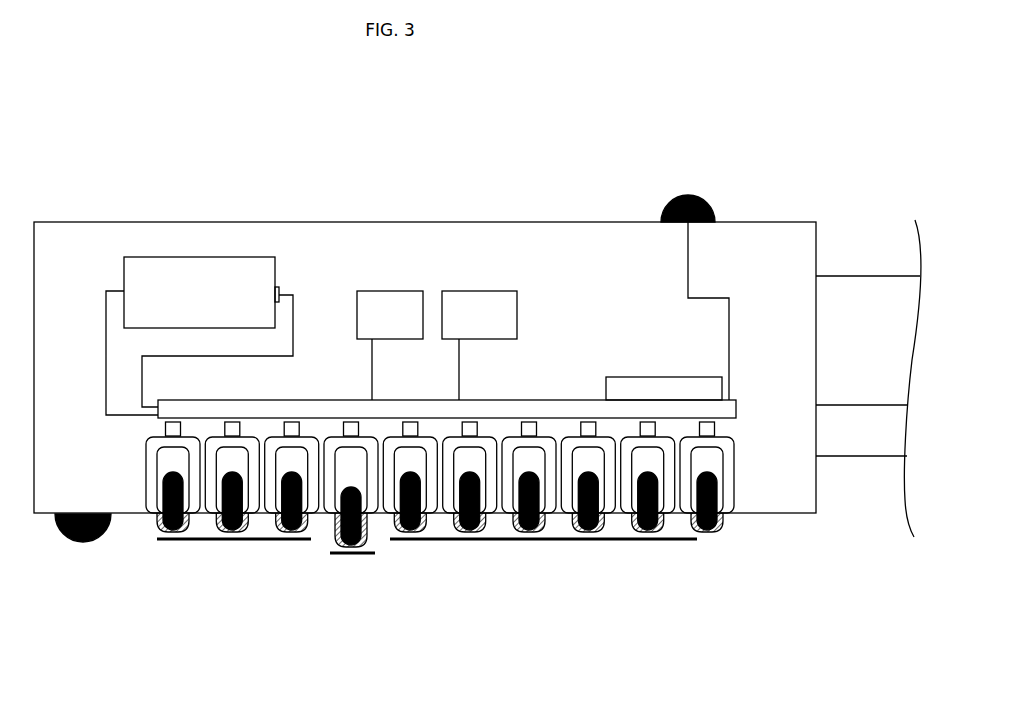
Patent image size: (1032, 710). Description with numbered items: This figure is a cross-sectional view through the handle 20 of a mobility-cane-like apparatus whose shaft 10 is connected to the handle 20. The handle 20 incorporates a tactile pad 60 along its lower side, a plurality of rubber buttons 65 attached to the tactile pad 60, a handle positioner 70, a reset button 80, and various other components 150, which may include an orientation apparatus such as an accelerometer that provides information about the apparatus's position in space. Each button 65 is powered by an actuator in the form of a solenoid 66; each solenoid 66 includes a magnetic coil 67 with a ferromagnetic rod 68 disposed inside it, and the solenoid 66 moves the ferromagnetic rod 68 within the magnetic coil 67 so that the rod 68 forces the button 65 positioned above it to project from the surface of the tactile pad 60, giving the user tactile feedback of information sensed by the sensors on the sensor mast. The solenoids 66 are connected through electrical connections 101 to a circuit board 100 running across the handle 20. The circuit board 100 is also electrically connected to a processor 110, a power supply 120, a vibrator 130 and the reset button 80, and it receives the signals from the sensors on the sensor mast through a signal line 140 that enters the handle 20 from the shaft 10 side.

The shaft 10 is at (873, 276).
The handle 20 is at (783, 222).
The tactile pad 60 is at (528, 556).
The buttons 65 is at (707, 563).
The solenoid 66 is at (735, 457).
The magnetic coil 67 is at (722, 475).
The ferromagnetic rod 68 is at (717, 501).
The handle positioner 70 is at (83, 544).
The reset button 80 is at (688, 195).
The circuit board 100 is at (578, 400).
The electrical connections 101 is at (715, 425).
The processor 110 is at (617, 377).
The power supply 120 is at (217, 257).
The vibrator 130 is at (402, 291).
The signal line 140 is at (840, 405).
The other components 150 is at (488, 291).